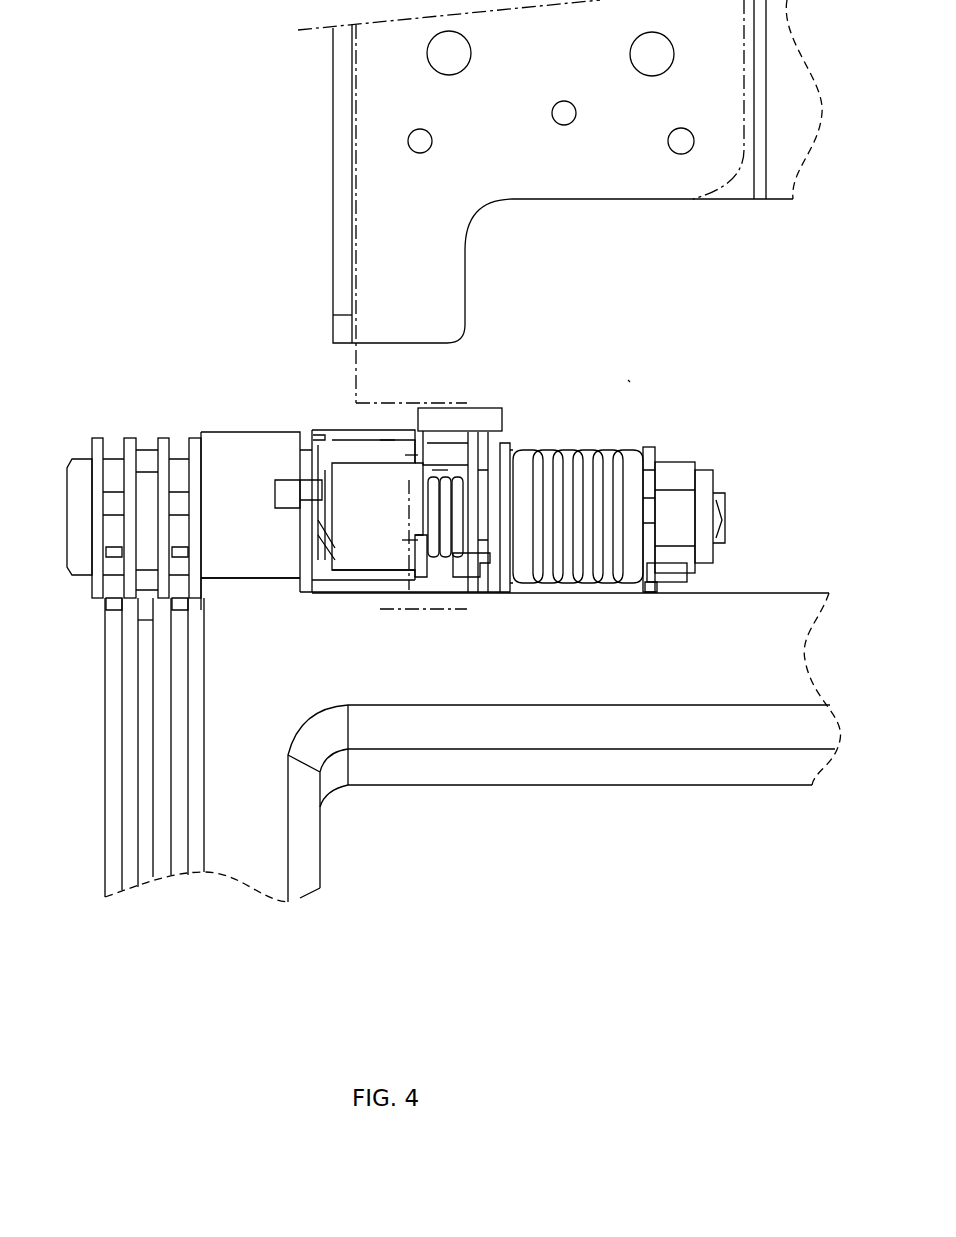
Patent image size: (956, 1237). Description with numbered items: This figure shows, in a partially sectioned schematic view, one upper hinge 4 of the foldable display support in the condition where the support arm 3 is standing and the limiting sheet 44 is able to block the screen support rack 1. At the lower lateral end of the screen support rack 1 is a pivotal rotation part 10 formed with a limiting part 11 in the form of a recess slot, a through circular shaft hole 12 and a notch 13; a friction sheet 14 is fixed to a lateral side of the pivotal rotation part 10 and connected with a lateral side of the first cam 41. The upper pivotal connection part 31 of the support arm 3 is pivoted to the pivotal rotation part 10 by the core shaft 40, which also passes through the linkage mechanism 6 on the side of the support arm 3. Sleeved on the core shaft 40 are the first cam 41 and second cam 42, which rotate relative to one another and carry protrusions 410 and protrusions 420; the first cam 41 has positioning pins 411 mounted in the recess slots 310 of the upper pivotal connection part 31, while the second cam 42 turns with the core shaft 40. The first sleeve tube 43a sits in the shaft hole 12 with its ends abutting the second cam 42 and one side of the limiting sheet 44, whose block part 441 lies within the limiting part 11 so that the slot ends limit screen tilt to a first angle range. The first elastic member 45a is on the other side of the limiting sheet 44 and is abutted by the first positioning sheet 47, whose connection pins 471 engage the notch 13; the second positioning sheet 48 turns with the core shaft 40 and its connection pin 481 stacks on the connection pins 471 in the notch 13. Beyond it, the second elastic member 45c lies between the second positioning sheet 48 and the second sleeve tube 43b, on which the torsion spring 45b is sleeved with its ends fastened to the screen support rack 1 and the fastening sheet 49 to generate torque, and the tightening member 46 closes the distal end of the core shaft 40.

The screen support rack 1 is at (366, 286).
The pivotal rotation part 10 is at (392, 447).
The limiting part 11 is at (410, 540).
The shaft hole 12 is at (412, 455).
The notch 13 is at (440, 470).
The friction sheet 14 is at (362, 470).
The support arm 3 is at (535, 692).
The upper pivotal connection part 31 is at (222, 540).
The recess slots 310 is at (293, 510).
The upper hinge 4 is at (628, 380).
The core shaft 40 is at (78, 499).
The first cam 41 is at (300, 580).
The protrusions 410 is at (328, 478).
The positioning pins 411 is at (290, 495).
The second cam 42 is at (340, 580).
The protrusions 420 is at (312, 575).
The first sleeve tube 43a is at (350, 460).
The second sleeve tube 43b is at (642, 480).
The limiting sheet 44 is at (458, 585).
The block part 441 is at (440, 585).
The first elastic member 45a is at (468, 585).
The torsion spring 45b is at (608, 565).
The second elastic member 45c is at (505, 545).
The tightening member 46 is at (677, 470).
The first positioning sheet 47 is at (503, 450).
The connection pins 471 is at (455, 450).
The second positioning sheet 48 is at (503, 480).
The connection pin 481 is at (448, 585).
The fastening sheet 49 is at (650, 455).
The linkage mechanism 6 is at (105, 723).